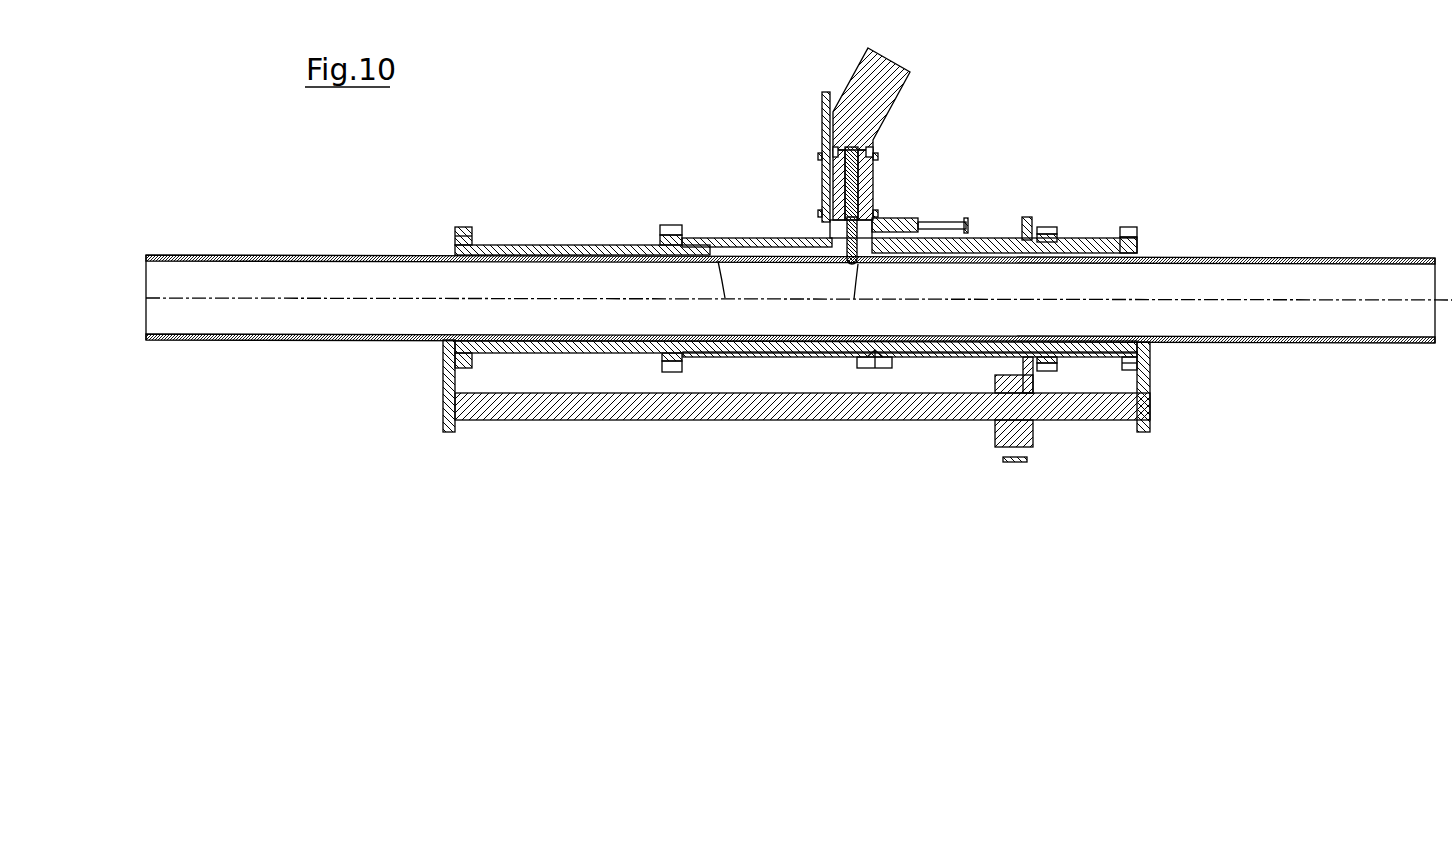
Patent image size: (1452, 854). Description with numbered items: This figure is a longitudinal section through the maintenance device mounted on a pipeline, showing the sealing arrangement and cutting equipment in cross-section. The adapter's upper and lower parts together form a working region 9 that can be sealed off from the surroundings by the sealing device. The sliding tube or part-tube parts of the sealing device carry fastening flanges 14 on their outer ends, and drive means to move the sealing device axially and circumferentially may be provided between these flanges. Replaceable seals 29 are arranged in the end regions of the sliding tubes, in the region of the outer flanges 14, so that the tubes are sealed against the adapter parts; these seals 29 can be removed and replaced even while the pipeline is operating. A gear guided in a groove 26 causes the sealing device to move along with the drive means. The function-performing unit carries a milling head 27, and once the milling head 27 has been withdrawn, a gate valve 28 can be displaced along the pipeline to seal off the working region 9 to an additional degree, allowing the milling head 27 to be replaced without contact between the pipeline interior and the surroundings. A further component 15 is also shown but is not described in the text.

The working region 9 is at (772, 251).
The fastening flanges 14 is at (671, 226).
The bolt 15 is at (1050, 228).
The groove 26 is at (1049, 385).
The milling head 27 is at (858, 251).
The gate valve 28 is at (951, 220).
The replaceable seals 29 is at (672, 373).